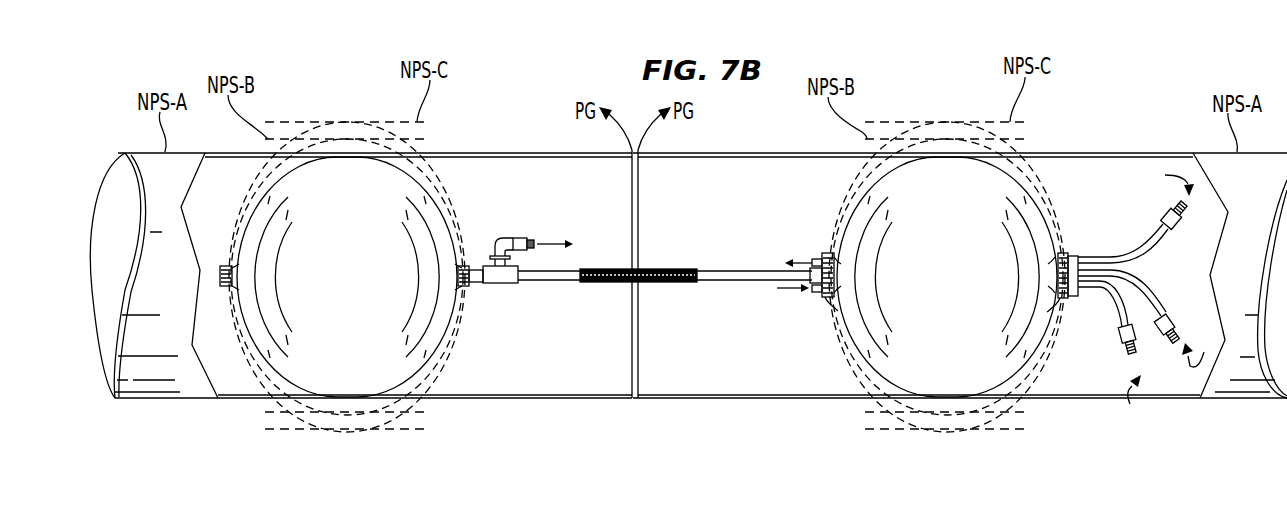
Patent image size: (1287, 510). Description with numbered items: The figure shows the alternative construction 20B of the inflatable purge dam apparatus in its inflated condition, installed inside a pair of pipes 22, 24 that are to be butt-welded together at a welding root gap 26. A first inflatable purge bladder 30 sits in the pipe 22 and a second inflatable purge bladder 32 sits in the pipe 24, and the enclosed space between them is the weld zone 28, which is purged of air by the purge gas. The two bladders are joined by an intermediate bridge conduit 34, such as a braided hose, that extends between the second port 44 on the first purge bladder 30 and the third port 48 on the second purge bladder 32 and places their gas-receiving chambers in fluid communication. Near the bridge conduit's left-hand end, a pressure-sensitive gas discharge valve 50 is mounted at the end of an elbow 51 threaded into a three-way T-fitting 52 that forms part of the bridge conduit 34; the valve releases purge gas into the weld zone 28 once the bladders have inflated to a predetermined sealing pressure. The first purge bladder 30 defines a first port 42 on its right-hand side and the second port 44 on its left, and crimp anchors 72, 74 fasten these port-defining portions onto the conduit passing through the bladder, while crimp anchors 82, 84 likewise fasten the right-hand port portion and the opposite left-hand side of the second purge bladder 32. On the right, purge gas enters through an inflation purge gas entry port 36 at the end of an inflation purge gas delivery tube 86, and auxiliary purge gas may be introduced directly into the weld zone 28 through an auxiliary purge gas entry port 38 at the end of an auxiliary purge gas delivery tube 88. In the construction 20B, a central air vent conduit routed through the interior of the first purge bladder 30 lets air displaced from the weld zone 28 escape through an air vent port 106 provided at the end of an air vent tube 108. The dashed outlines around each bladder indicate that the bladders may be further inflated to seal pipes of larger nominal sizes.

The alternative construction of purge dam apparatus 20B is at (1110, 174).
The pipe 22 is at (1225, 378).
The pipe 24 is at (194, 383).
The welding root gap 26 is at (634, 410).
The weld zone 28 is at (730, 207).
The first inflatable purge bladder 30 is at (990, 350).
The second inflatable purge bladder 32 is at (405, 354).
The bridge conduit 34 is at (727, 281).
The inflation purge gas entry port 36 is at (1178, 320).
The auxiliary purge gas entry port 38 is at (1182, 205).
The first port 42 is at (1066, 298).
The second port 44 is at (822, 298).
The third port 48 is at (477, 283).
The pressure-sensitive gas discharge valve 50 is at (526, 238).
The elbow 51 is at (500, 238).
The three-way T-fitting 52 is at (503, 284).
The crimp anchor 72 is at (1063, 253).
The crimp anchor 74 is at (824, 253).
The crimp anchor 82 is at (464, 266).
The crimp anchor 84 is at (226, 266).
The inflation purge gas delivery tube 86 is at (1155, 292).
The auxiliary purge gas delivery tube 88 is at (1152, 240).
The air vent port 106 is at (1142, 352).
The air vent tube 108 is at (1120, 318).